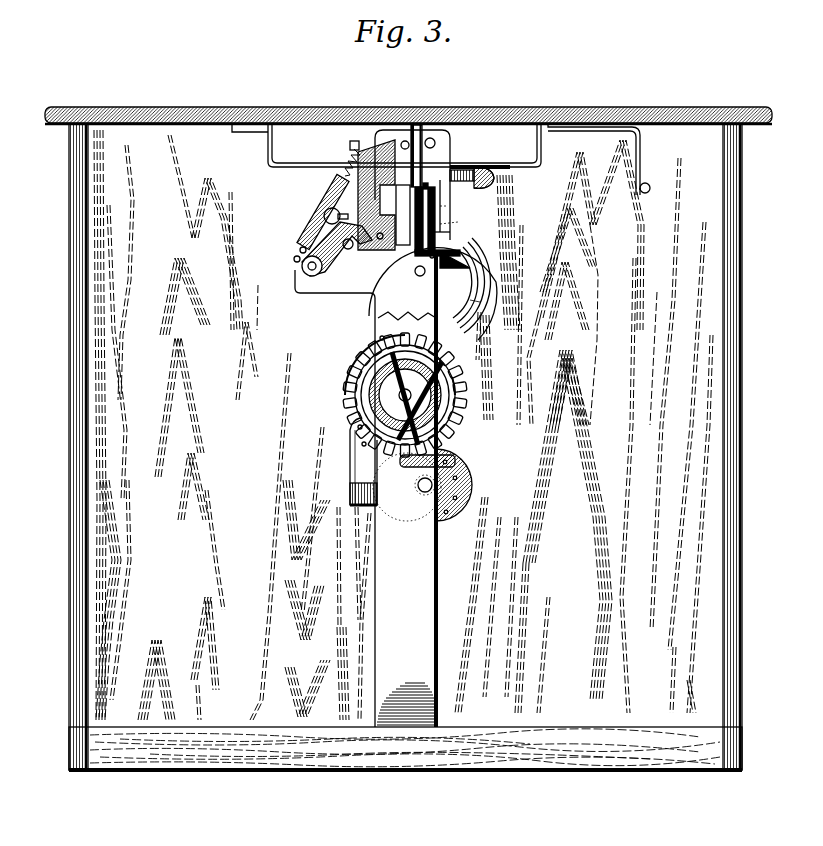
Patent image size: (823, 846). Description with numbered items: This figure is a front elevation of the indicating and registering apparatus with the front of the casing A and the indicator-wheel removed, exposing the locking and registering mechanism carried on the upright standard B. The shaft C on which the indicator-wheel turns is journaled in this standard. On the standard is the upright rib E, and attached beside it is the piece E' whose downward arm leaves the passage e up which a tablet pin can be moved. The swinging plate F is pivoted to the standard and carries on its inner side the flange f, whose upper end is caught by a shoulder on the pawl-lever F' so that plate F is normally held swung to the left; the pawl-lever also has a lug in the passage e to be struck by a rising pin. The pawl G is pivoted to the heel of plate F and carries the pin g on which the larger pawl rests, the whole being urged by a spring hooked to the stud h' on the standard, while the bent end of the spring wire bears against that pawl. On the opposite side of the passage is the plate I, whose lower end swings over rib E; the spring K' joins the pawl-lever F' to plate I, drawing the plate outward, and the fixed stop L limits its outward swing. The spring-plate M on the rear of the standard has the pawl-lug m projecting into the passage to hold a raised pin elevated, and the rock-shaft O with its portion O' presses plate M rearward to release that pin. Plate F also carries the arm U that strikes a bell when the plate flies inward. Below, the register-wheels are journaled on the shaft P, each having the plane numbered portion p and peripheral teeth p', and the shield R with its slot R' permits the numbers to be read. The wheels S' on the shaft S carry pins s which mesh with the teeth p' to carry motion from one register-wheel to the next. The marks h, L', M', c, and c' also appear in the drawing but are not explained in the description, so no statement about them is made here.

The casing A is at (68, 482).
The upright standard B is at (365, 488).
The shaft C is at (465, 392).
The upright rib E is at (402, 179).
The piece E' is at (474, 251).
The swinging plate F is at (376, 195).
The pawl-lever F' is at (486, 188).
The flange or rib f is at (383, 231).
The pawl G is at (337, 252).
The pin or lug g is at (341, 259).
The spring hook h is at (341, 158).
The projection or stud h' is at (283, 263).
The plate I is at (442, 206).
The spring K' is at (472, 162).
The fixed stop L is at (433, 289).
The disk stud L' is at (423, 257).
The spring-plate M is at (426, 137).
The rod stud M' is at (408, 272).
The pawl-lug m is at (453, 207).
The passage e is at (456, 218).
The slide c is at (428, 220).
The slide head c' is at (435, 172).
The rock-shaft O is at (250, 139).
The portion of rock-shaft O' is at (404, 157).
The shaft P is at (453, 377).
The plane numbered portion p is at (363, 461).
The teeth p' is at (347, 451).
The shield or plate R is at (389, 395).
The slot R' is at (367, 365).
The shaft S is at (407, 493).
The wheel S' is at (451, 485).
The pin s is at (455, 498).
The arm U is at (488, 297).